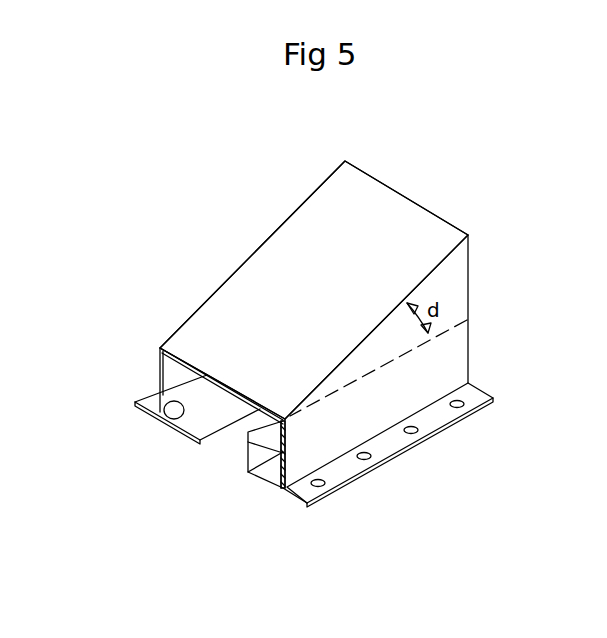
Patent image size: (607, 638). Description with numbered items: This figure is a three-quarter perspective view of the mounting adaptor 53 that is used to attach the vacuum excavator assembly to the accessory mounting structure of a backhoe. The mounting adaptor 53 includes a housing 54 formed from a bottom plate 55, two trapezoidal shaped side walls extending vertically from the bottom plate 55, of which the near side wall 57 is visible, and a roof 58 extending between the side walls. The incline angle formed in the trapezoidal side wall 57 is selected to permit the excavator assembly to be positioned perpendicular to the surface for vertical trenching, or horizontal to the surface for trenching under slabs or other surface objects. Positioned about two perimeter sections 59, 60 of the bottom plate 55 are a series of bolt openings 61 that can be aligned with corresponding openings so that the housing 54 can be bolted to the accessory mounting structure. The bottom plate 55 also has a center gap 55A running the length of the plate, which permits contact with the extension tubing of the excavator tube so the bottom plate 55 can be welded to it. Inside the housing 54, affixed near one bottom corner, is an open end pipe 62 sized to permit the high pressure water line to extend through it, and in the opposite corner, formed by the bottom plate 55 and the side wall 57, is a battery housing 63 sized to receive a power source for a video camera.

The mounting adaptor 53 is at (404, 141).
The housing 54 is at (232, 321).
The bottom plate 55 is at (239, 479).
The center gap 55A is at (227, 448).
The side wall 57 is at (450, 277).
The roof 58 is at (315, 253).
The perimeter section 59 is at (155, 403).
The perimeter section 60 is at (390, 438).
The bolt openings 61 is at (460, 402).
The open end pipe 62 is at (179, 422).
The battery housing 63 is at (271, 433).